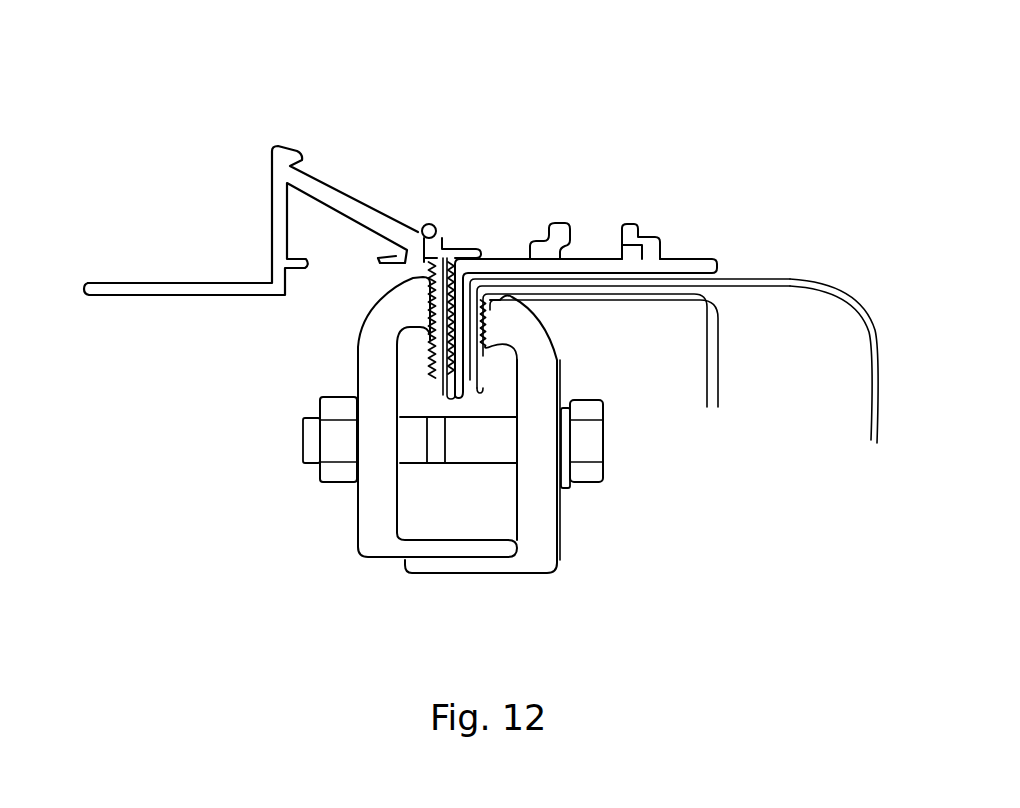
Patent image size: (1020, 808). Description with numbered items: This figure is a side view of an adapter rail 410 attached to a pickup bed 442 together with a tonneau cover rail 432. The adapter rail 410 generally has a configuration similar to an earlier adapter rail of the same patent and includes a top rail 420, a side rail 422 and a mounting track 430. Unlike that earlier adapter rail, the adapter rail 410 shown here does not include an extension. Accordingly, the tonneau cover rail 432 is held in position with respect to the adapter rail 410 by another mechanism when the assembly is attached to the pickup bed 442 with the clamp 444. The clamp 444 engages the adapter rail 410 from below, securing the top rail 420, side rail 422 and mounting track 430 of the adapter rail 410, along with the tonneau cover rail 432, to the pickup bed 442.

The adapter rail 410 is at (470, 182).
The top rail 420 is at (698, 263).
The side rail 422 is at (453, 373).
The mounting track 430 is at (632, 225).
The tonneau cover rail 432 is at (202, 337).
The pickup bed 442 is at (790, 290).
The clamp 444 is at (377, 537).